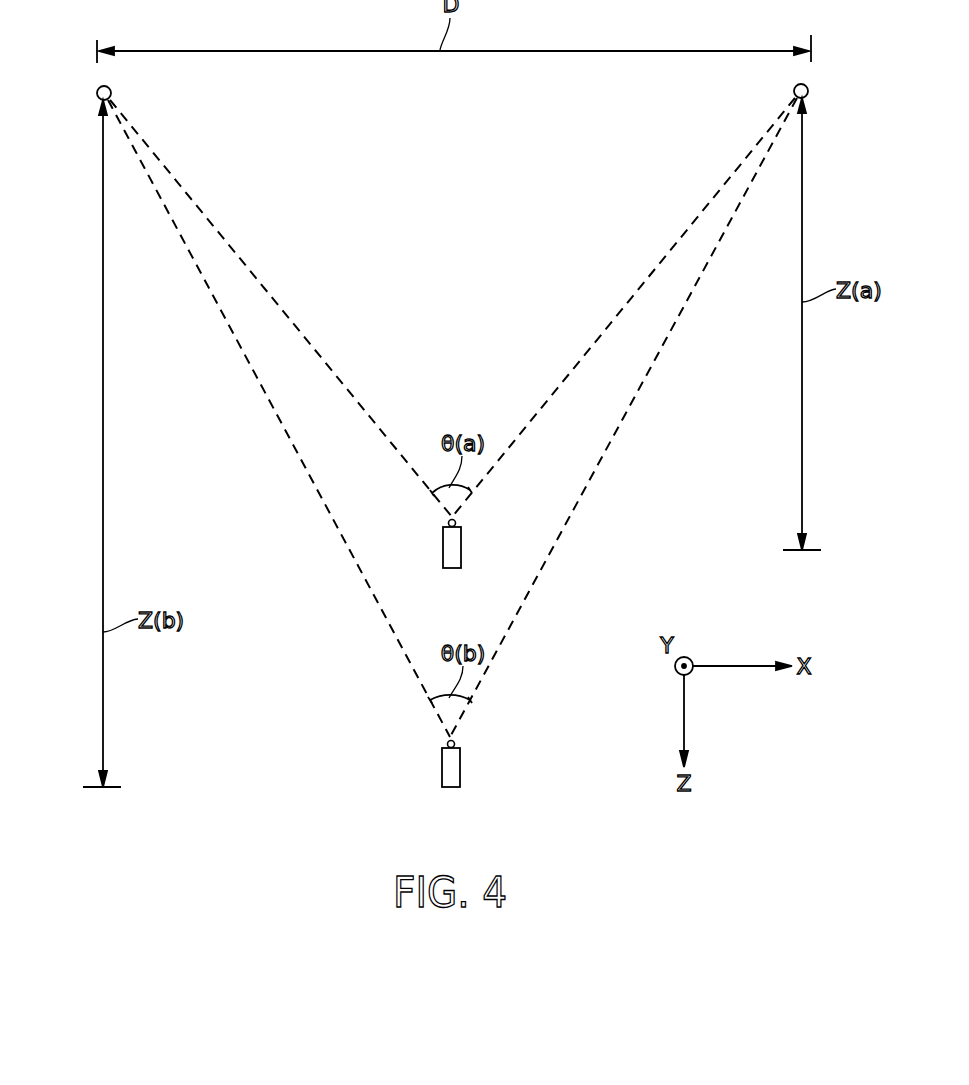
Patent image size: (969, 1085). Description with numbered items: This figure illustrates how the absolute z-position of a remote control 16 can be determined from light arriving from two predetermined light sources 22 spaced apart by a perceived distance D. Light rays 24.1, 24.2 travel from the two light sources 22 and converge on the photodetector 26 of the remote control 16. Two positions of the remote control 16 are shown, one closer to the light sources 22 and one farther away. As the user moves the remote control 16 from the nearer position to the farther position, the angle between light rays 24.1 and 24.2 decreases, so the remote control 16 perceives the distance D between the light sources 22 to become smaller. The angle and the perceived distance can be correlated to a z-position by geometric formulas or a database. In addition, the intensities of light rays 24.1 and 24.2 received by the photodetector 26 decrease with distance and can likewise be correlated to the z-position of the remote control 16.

The remote control 16 is at (461, 548).
The predetermined light sources 22 is at (97, 93).
The light ray 24.1 is at (272, 293).
The light ray 24.2 is at (635, 290).
The photodetector 26 is at (447, 520).